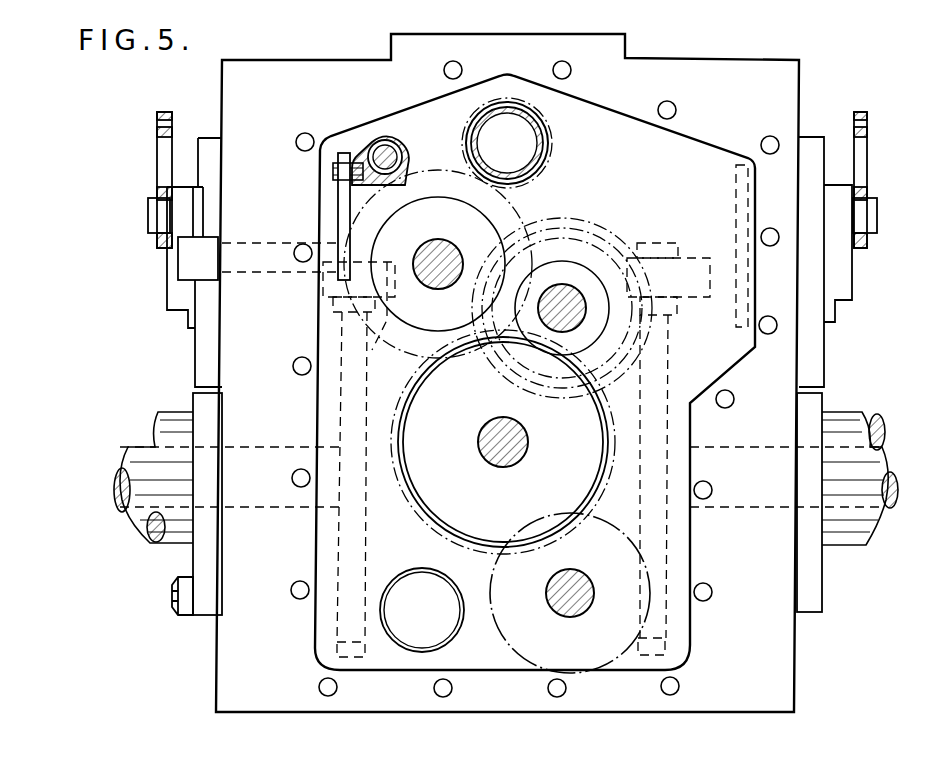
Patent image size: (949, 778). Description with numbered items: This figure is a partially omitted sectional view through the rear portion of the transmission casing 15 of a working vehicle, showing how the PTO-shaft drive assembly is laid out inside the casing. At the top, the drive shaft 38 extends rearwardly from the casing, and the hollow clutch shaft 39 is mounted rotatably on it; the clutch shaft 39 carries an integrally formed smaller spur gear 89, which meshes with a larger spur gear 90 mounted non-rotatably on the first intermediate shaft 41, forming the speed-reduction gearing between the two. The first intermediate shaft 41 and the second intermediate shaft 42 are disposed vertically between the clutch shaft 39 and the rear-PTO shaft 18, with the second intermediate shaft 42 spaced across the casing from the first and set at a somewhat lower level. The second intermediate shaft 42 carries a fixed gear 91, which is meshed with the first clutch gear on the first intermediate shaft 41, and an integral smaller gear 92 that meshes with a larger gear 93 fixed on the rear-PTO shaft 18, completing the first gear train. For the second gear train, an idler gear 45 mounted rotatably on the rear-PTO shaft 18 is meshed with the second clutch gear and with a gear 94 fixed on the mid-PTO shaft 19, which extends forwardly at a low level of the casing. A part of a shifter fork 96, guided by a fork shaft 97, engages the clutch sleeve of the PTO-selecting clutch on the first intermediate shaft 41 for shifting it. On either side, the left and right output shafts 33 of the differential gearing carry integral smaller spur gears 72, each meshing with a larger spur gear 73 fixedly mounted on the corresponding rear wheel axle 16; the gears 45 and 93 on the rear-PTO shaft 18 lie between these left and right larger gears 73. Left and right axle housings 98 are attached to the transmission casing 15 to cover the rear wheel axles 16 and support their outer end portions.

The transmission casing 15 is at (782, 104).
The axles 16 is at (143, 490).
The rear-PTO shaft 18 is at (498, 456).
The mid-PTO shaft 19 is at (582, 585).
The output shafts 33 is at (690, 283).
The drive shaft 38 is at (512, 142).
The clutch shaft 39 is at (468, 120).
The intermediate shaft 41 is at (438, 258).
The second intermediate shaft 42 is at (575, 308).
The idler gear 45 is at (463, 536).
The smaller spur gear 72 is at (320, 222).
The larger spur gear 73 is at (340, 655).
The smaller spur gear 89 is at (550, 160).
The larger spur gear 90 is at (535, 224).
The gear 91 is at (625, 350).
The smaller gear 92 is at (600, 372).
The larger gear 93 is at (420, 505).
The gear 94 is at (515, 650).
The shifter fork 96 is at (365, 170).
The fork shaft 97 is at (385, 138).
The axle housings 98 is at (177, 418).